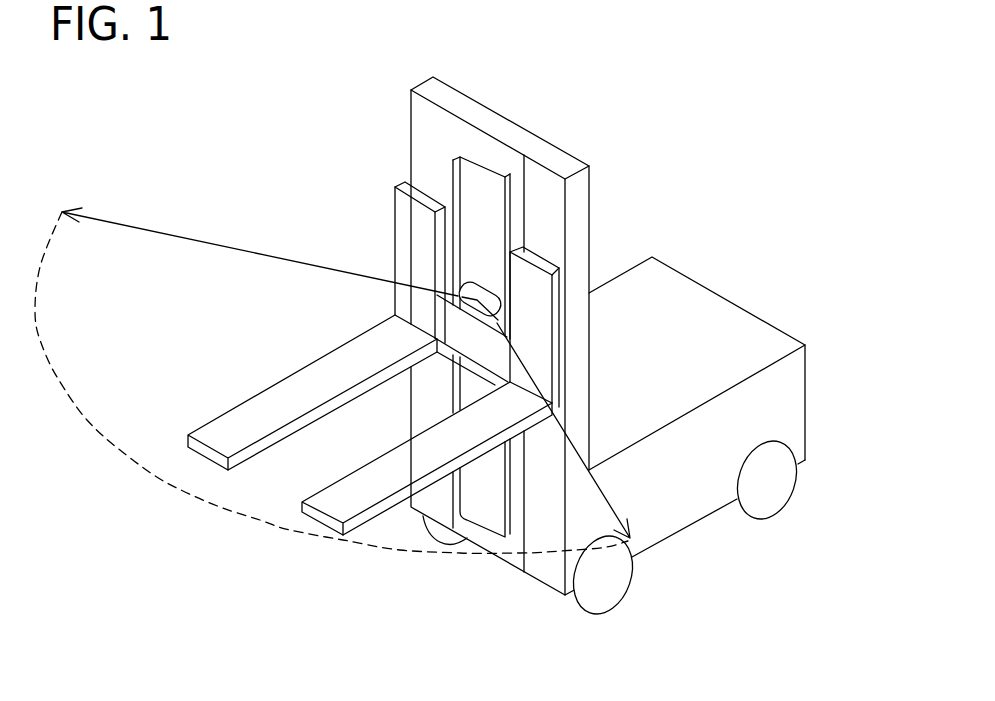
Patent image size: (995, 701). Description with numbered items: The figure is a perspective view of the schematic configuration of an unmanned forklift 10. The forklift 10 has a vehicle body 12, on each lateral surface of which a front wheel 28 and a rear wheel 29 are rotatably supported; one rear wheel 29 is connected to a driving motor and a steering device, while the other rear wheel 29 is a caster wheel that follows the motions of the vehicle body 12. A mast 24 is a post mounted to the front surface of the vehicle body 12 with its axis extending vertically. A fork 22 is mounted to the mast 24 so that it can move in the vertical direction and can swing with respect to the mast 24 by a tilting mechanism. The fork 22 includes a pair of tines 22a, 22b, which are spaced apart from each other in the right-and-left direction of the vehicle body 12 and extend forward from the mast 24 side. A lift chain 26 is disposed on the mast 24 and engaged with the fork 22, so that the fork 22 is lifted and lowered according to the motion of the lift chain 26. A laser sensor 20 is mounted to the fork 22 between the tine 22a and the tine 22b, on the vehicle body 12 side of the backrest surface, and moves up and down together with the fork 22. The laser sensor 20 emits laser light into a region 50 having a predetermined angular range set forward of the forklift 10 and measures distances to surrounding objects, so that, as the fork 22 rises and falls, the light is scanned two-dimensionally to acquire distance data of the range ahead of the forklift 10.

The forklift 10 is at (58, 84).
The vehicle body 12 is at (692, 308).
The laser sensor 20 is at (495, 307).
The fork 22 is at (290, 178).
The tine 22a is at (292, 397).
The tine 22b is at (390, 470).
The mast 24 is at (543, 565).
The lift chain 26 is at (457, 157).
The front wheel 28 is at (607, 583).
The rear wheel 29 is at (772, 492).
The region 50 is at (128, 458).